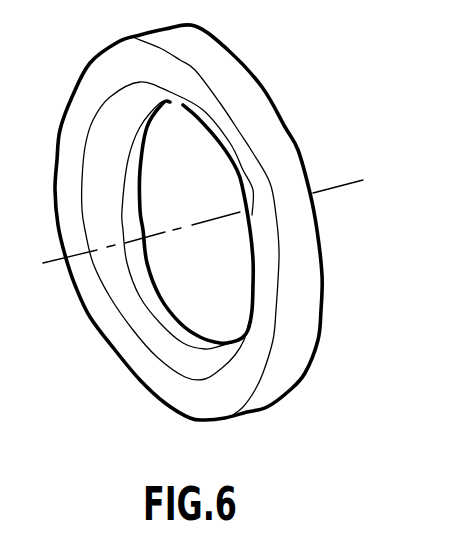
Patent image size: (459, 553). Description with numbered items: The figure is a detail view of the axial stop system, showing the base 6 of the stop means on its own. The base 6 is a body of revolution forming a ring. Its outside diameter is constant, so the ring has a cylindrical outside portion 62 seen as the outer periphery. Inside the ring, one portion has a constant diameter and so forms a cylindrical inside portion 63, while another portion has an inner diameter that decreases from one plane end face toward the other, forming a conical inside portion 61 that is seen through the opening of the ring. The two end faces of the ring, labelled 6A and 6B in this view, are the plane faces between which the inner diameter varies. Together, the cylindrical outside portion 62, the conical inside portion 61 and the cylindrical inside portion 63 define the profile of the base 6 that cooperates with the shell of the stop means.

The base 6 is at (187, 217).
The front face of ring 6A is at (83, 108).
The outer peripheral surface 6B is at (305, 173).
The conical inside portion 61 is at (97, 208).
The cylindrical outside portion 62 is at (200, 50).
The cylindrical inside portion 63 is at (147, 263).